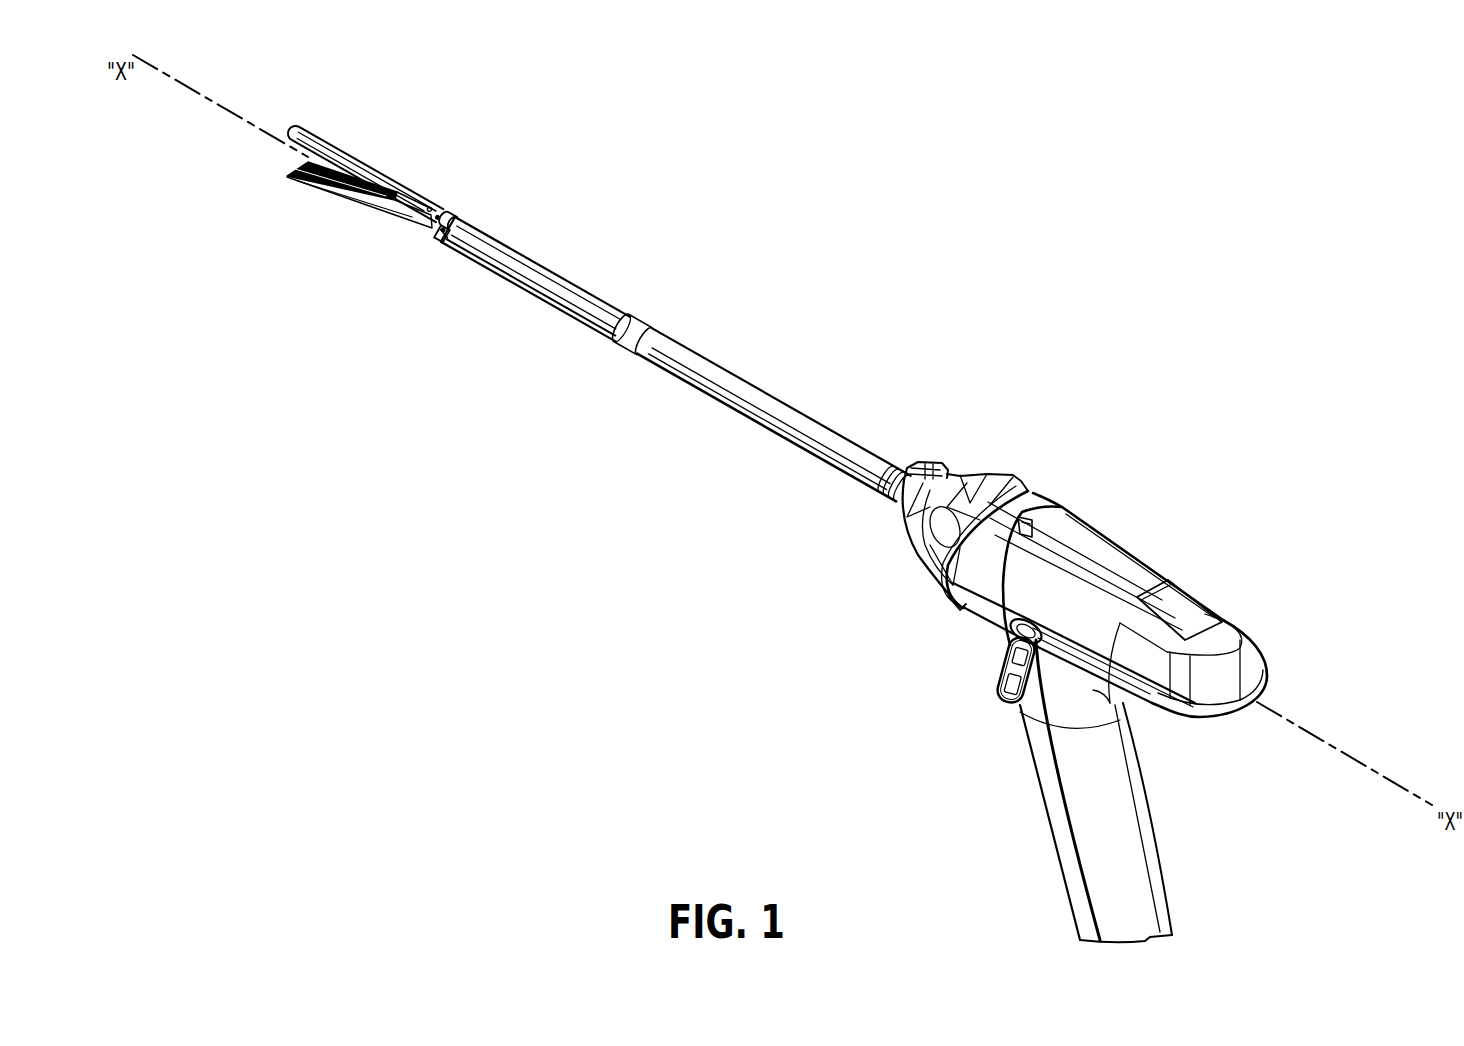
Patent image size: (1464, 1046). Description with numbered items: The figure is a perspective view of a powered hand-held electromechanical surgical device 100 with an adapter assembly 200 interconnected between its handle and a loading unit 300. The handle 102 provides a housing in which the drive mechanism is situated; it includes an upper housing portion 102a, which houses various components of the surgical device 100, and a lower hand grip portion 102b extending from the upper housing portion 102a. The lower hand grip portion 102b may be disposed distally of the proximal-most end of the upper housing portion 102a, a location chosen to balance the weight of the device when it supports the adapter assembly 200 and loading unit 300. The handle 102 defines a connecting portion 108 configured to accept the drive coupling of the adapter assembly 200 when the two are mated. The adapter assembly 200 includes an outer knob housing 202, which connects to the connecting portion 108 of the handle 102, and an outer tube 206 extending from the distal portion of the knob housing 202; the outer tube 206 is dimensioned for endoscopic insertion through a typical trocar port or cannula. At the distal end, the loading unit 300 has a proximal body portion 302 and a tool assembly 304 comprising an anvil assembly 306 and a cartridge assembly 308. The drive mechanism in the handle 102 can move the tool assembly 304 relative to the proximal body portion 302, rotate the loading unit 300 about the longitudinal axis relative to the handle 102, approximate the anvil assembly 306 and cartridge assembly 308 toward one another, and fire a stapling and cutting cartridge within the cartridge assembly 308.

The surgical device 100 is at (786, 516).
The handle 102 is at (1124, 686).
The upper housing portion 102a is at (1228, 633).
The lower hand grip portion 102b is at (1160, 863).
The connecting portion 108 is at (1032, 490).
The adapter assembly 200 is at (813, 479).
The outer knob housing 202 is at (937, 612).
The outer tube 206 is at (713, 374).
The loading unit 300 is at (465, 223).
The proximal body portion 302 is at (546, 285).
The tool assembly 304 is at (438, 222).
The anvil assembly 306 is at (364, 172).
The cartridge assembly 308 is at (330, 205).